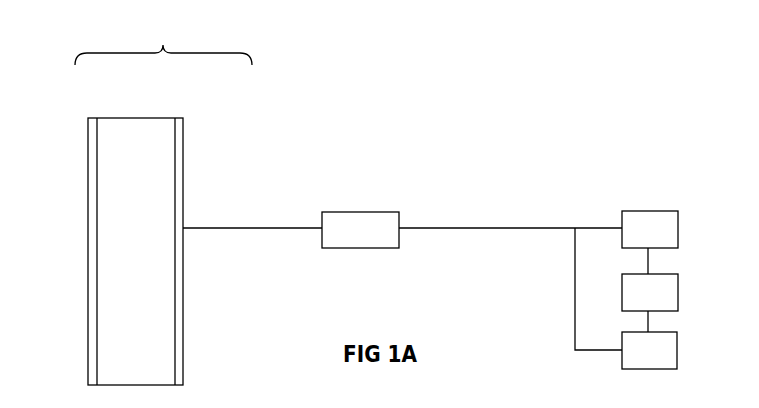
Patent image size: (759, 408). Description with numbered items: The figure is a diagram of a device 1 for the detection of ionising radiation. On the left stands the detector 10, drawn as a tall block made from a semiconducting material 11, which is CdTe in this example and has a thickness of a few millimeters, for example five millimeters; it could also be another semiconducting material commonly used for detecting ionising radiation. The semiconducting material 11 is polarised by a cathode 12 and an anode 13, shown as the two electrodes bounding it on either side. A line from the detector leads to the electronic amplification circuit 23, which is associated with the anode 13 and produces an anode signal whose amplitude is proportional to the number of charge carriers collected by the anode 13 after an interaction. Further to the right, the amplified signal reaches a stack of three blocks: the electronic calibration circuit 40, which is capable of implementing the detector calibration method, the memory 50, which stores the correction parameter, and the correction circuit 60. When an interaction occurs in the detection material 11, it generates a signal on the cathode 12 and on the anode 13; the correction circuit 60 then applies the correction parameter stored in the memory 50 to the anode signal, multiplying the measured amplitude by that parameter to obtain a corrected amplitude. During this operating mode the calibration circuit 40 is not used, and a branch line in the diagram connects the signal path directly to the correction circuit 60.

The detection device 1 is at (73, 170).
The detector 10 is at (163, 42).
The semiconducting material 11 is at (142, 152).
The cathode 12 is at (95, 157).
The anode 13 is at (180, 143).
The electronic amplification circuit 23 is at (385, 228).
The electronic calibration circuit 40 is at (650, 209).
The memory 50 is at (668, 292).
The correction circuit 60 is at (671, 351).